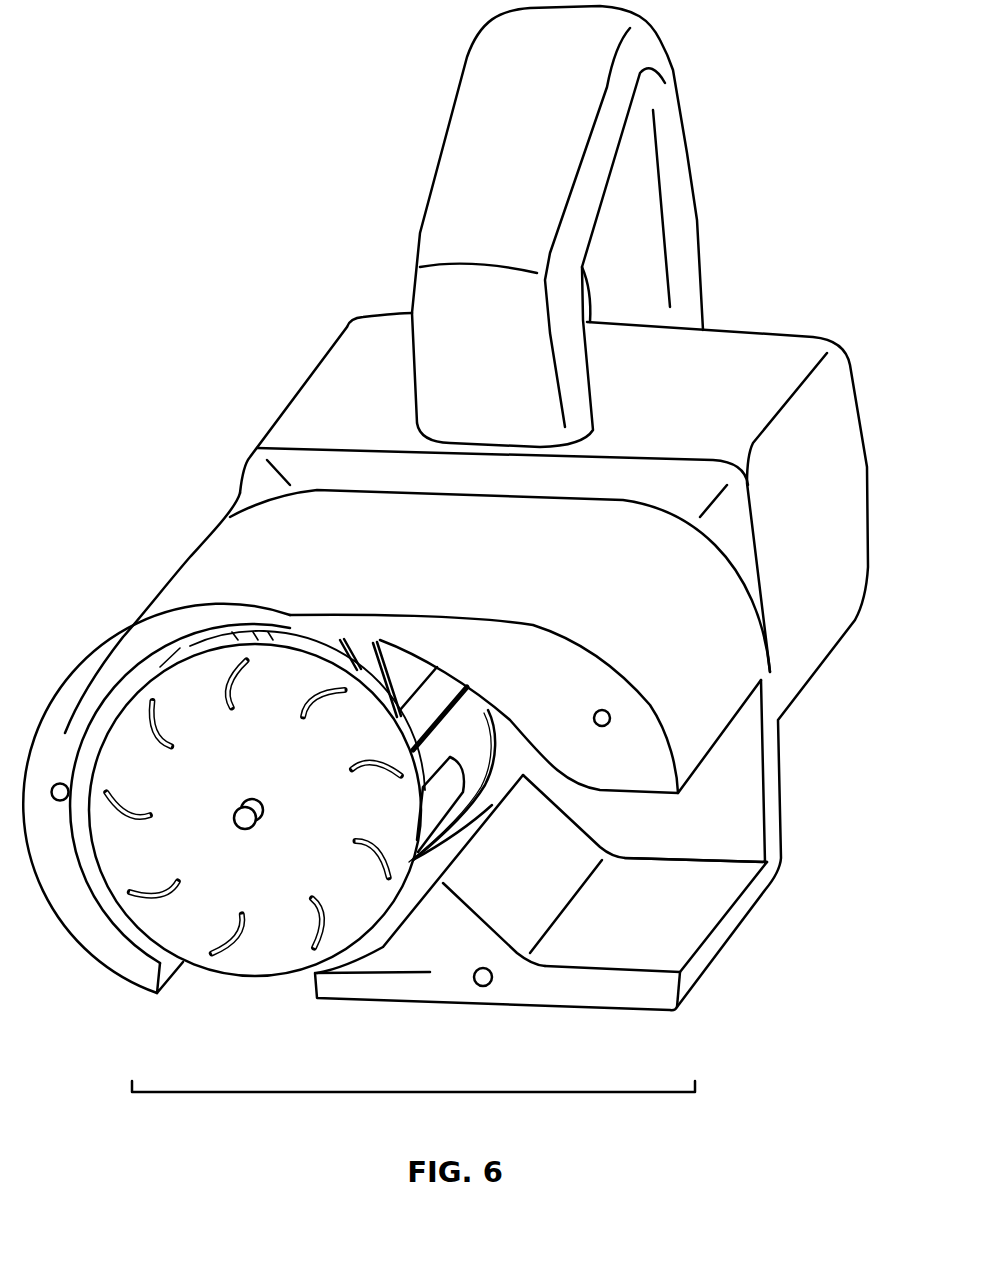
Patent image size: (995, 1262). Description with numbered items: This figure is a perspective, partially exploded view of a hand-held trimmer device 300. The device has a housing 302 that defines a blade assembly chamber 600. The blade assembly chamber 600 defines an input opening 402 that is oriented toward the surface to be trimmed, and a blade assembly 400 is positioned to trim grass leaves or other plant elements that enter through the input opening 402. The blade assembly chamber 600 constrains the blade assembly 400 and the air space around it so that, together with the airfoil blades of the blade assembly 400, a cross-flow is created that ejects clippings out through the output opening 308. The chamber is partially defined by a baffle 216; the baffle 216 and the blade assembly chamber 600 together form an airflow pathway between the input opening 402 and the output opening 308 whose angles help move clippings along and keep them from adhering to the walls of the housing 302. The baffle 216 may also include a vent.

The hand-held trimmer device 300 is at (142, 354).
The housing 302 is at (832, 385).
The output opening 308 is at (835, 722).
The blade assembly 400 is at (122, 752).
The input opening 402 is at (195, 1028).
The baffle 216 is at (430, 972).
The blade assembly chamber 600 is at (413, 1105).